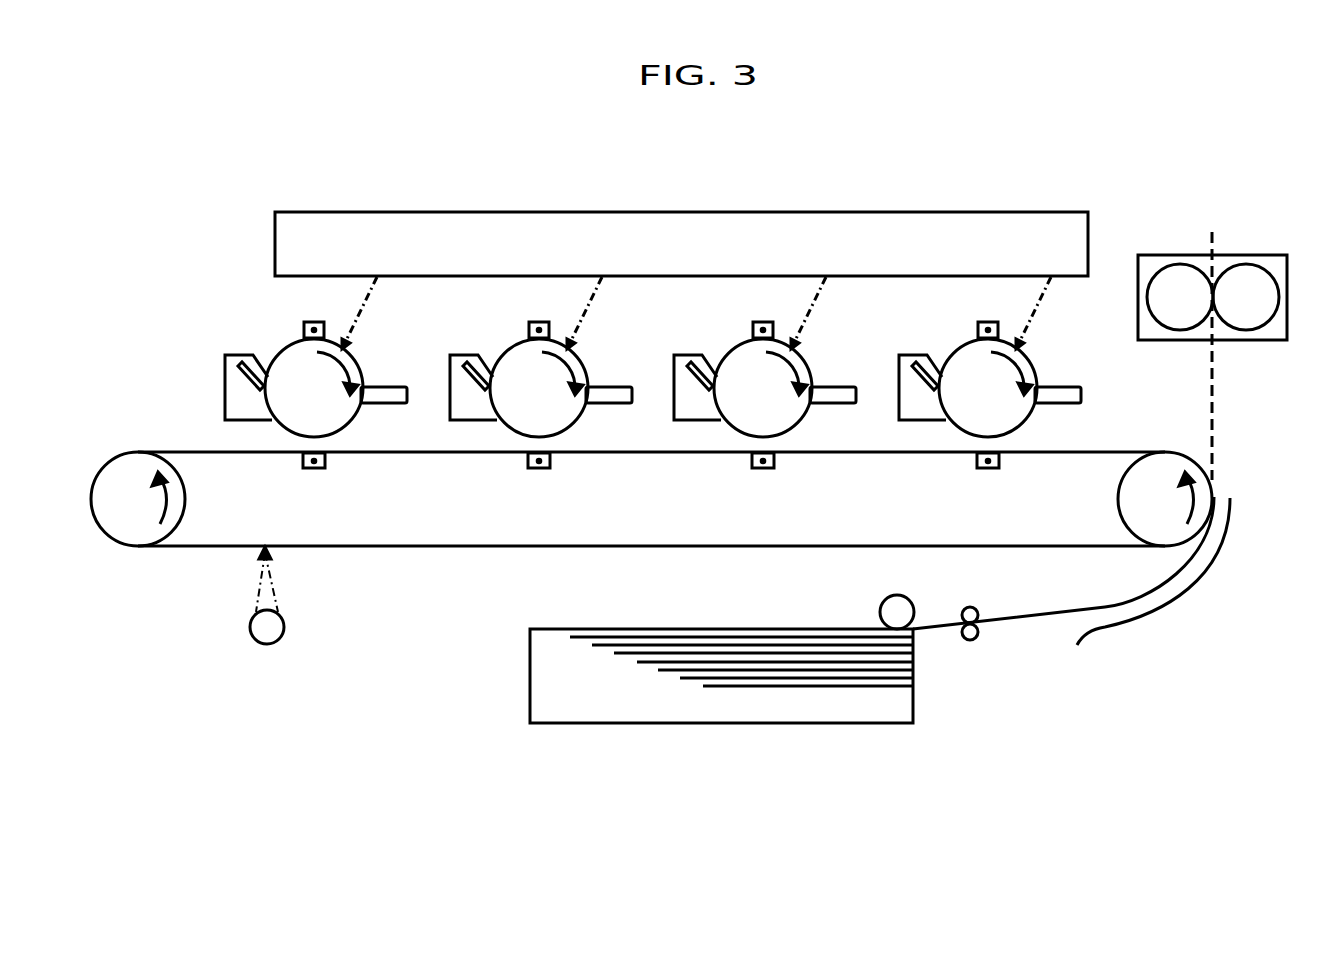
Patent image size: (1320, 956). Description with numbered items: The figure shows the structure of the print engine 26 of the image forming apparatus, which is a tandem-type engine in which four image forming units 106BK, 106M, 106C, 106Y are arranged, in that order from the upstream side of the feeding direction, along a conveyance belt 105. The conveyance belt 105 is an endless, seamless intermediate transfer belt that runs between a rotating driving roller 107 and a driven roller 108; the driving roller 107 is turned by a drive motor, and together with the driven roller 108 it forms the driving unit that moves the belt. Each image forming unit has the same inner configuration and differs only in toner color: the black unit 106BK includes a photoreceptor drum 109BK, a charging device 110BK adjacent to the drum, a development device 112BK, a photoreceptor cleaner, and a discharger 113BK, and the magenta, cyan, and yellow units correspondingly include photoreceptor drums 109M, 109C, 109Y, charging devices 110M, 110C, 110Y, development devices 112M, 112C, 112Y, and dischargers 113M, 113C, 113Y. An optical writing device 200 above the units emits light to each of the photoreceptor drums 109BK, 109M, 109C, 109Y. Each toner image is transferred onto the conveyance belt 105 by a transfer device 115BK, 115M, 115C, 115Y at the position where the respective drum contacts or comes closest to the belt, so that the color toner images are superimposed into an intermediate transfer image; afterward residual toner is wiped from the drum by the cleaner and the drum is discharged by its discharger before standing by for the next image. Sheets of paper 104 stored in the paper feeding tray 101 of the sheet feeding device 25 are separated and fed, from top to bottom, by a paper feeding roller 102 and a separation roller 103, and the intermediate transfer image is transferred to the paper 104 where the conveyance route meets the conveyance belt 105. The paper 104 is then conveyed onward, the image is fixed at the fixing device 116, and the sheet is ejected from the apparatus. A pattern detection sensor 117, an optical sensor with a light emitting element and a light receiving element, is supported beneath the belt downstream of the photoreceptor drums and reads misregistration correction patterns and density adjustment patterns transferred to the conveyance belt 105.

The print engine 26 is at (203, 182).
The optical writing device 200 is at (697, 195).
The fixing device 116 is at (1250, 255).
The image forming unit 106Y is at (362, 290).
The image forming unit 106C is at (587, 290).
The image forming unit 106M is at (811, 290).
The image forming unit 106BK is at (1042, 290).
The charging device 110Y is at (293, 308).
The charging device 110C is at (518, 308).
The charging device 110M is at (741, 308).
The charging device 110BK is at (963, 308).
The photoreceptor drum 109Y is at (285, 380).
The photoreceptor drum 109C is at (510, 380).
The photoreceptor drum 109M is at (733, 380).
The photoreceptor drum 109BK is at (952, 380).
The discharger 113Y is at (212, 386).
The discharger 113C is at (437, 386).
The discharger 113M is at (660, 386).
The discharger 113BK is at (882, 386).
The development device 112Y is at (393, 419).
The development device 112C is at (618, 419).
The development device 112M is at (842, 419).
The development device 112BK is at (1072, 419).
The transfer device 115Y is at (329, 483).
The transfer device 115C is at (554, 483).
The transfer device 115M is at (779, 483).
The transfer device 115BK is at (1006, 483).
The conveyance belt 105 is at (432, 548).
The driving roller 107 is at (188, 497).
The driven roller 108 is at (1117, 497).
The pattern detection sensor 117 is at (268, 645).
The paper feeding tray 101 is at (555, 628).
The paper 104 is at (728, 637).
The paper feeding roller 102 is at (900, 597).
The separation roller 103 is at (972, 607).
The sheet feeding device 25 is at (508, 681).